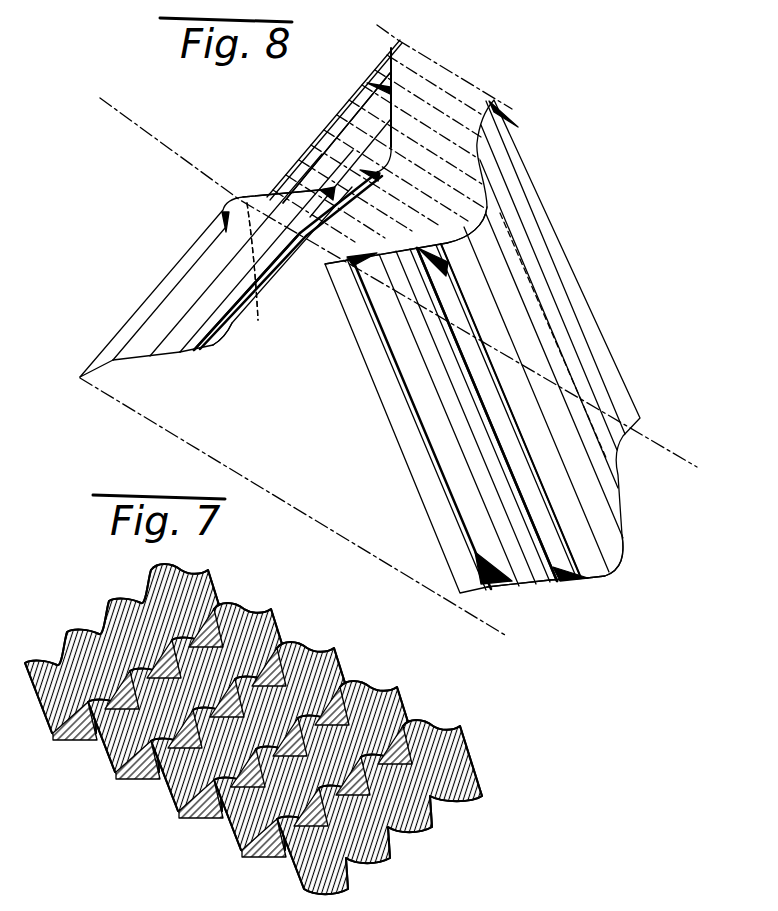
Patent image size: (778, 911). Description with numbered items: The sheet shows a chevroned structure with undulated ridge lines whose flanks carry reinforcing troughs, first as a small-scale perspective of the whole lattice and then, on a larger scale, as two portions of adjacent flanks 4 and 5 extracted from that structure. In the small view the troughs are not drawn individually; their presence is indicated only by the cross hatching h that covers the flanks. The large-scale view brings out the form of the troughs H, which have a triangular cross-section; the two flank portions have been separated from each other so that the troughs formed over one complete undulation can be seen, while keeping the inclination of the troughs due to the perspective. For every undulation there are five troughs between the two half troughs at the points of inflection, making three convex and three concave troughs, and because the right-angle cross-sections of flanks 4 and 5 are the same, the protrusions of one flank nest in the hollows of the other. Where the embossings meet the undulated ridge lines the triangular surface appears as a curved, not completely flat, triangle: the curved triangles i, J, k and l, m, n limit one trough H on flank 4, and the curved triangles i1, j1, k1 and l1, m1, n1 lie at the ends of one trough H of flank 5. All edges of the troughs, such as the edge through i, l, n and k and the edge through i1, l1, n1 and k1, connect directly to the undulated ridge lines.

In FIG. 8, the flank 4 is at (167, 285).
In FIG. 8, the flank 5 is at (473, 458).
In FIG. 7, the cross hatching h is at (146, 742).
In FIG. 8, the point of curved triangle ijk k is at (330, 187).
In FIG. 8, the point of curved triangle ijk i is at (357, 187).
In FIG. 8, the point of curved triangle ijk J is at (317, 240).
In FIG. 8, the reinforcing trough H is at (237, 303).
In FIG. 8, the point of curved triangle lmn l is at (183, 352).
In FIG. 8, the point of curved triangle lmn m is at (207, 350).
In FIG. 8, the point of curved triangle lmn n is at (213, 346).
In FIG. 8, the point of curved triangle i1 j1 k1 i1 is at (433, 250).
In FIG. 8, the point of curved triangle i1 j1 k1 is at (447, 241).
In FIG. 8, the point of curved triangle i1 j1 k1 j1 is at (455, 270).
In FIG. 8, the point of curved triangle l1 m1 n1 l1 is at (548, 581).
In FIG. 8, the point of curved triangle l1 m1 n1 m1 is at (570, 575).
In FIG. 8, the point of curved triangle l1 m1 n1 is at (590, 580).